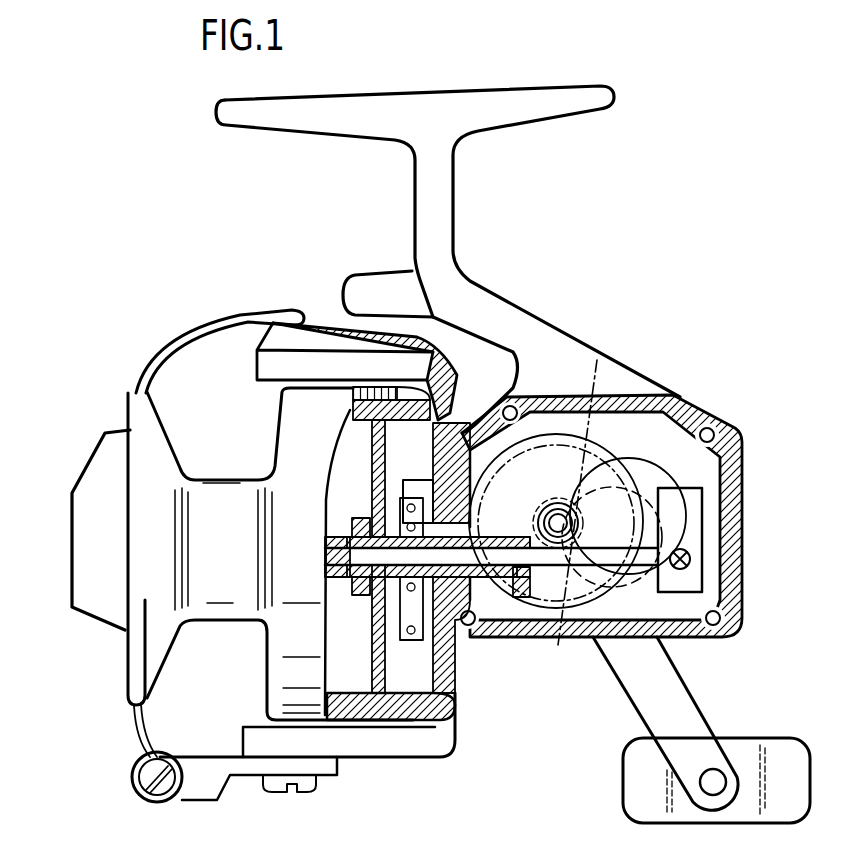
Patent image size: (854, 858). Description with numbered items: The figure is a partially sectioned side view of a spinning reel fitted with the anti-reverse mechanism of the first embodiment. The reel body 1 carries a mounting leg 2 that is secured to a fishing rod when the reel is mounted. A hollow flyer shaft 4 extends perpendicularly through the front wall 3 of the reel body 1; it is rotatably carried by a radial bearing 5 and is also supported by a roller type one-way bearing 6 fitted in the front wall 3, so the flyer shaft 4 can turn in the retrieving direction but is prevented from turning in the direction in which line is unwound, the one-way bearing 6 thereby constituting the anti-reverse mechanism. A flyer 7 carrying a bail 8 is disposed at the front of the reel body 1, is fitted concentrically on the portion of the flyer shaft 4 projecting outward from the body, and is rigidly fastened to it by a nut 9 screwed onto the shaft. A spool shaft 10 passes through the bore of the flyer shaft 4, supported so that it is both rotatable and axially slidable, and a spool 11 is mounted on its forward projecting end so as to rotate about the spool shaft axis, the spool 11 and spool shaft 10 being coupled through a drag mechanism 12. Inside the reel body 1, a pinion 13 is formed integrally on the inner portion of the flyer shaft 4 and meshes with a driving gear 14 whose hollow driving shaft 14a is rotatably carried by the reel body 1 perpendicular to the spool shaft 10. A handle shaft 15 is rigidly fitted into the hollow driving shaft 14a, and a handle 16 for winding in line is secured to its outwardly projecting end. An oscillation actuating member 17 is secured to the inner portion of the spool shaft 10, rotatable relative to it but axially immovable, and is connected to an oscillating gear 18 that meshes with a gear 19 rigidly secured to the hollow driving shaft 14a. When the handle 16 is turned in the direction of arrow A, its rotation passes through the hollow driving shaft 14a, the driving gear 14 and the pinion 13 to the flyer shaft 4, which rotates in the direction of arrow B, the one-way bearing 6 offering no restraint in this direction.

The reel body 1 is at (722, 415).
The mounting leg 2 is at (479, 100).
The front wall 3 is at (437, 430).
The hollow flyer shaft 4 is at (453, 633).
The radial bearing 5 is at (402, 627).
The roller type one-way bearing 6 is at (453, 637).
The flyer 7 is at (325, 323).
The bail 8 is at (170, 337).
The nut 9 is at (333, 590).
The spool shaft 10 is at (323, 553).
The spool 11 is at (132, 688).
The drag mechanism 12 is at (66, 548).
The pinion 13 is at (498, 528).
The driving gear 14 is at (597, 360).
The hollow driving shaft 14a is at (577, 503).
The handle shaft 15 is at (518, 628).
The handle 16 is at (670, 695).
The oscillation actuating member 17 is at (693, 520).
The oscillating gear 18 is at (700, 560).
The gear 19 is at (558, 589).
The arrow A is at (766, 700).
The arrow B is at (340, 537).